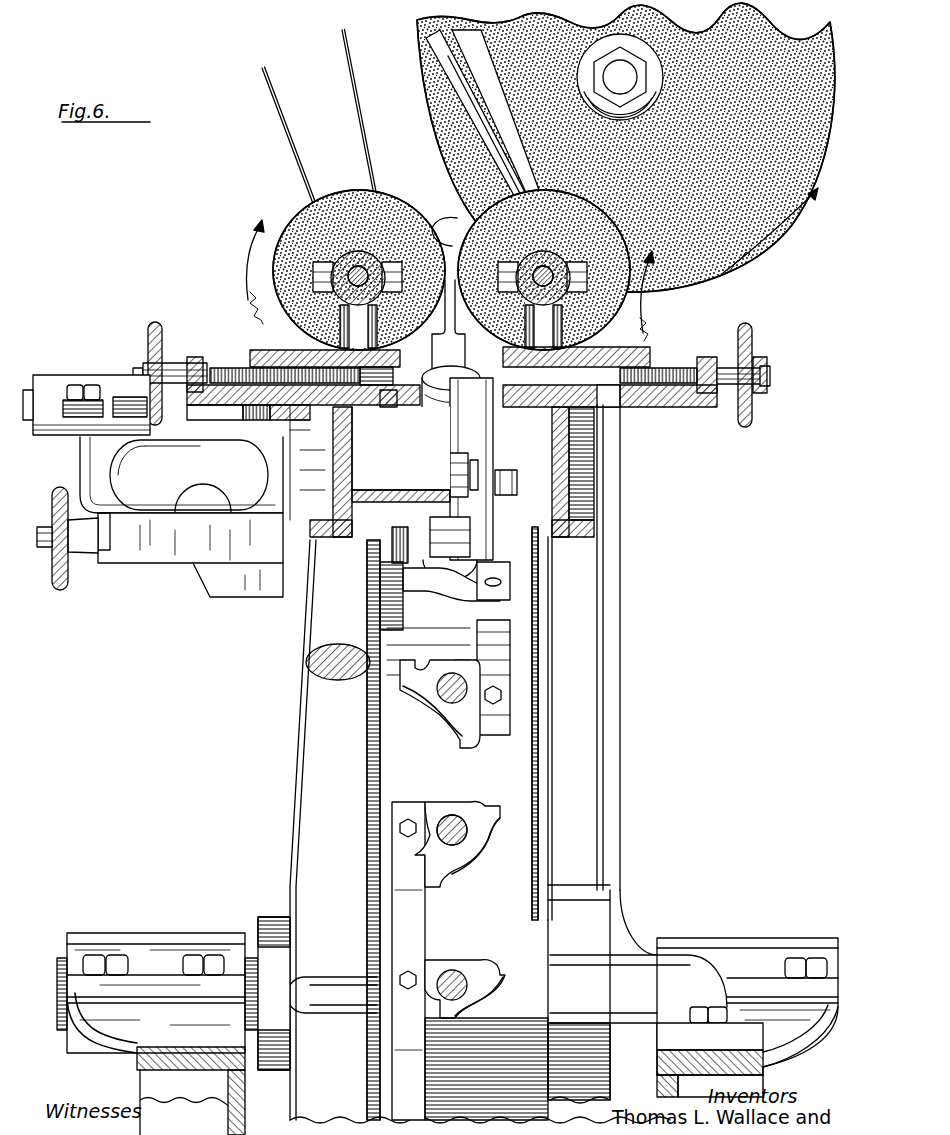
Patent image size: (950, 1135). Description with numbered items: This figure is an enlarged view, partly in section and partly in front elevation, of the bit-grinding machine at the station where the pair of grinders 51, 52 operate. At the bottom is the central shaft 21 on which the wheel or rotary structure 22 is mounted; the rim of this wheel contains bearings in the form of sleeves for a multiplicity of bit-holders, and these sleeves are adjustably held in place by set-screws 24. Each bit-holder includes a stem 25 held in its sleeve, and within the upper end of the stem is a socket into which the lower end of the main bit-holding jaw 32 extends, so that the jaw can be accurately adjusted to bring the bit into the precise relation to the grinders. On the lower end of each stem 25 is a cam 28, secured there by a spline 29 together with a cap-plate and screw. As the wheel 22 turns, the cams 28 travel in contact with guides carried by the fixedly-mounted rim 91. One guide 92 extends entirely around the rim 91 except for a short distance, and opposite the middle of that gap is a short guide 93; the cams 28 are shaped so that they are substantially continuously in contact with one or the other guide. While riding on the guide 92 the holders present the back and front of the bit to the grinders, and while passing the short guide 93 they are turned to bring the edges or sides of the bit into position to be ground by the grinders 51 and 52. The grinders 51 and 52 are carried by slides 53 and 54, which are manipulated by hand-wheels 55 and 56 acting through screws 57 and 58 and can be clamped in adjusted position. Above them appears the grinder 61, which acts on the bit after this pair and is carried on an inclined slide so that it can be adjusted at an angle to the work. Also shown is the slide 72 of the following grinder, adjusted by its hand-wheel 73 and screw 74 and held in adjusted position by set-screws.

The central shaft 21 is at (56, 965).
The wheel or rotary structure 22 is at (321, 733).
The set-screws 24 is at (518, 480).
The stem 25 is at (447, 400).
The cam 28 is at (413, 586).
The spline 29 is at (446, 820).
The main bit-holding jaw 32 is at (448, 330).
The grinder 51 is at (640, 303).
The grinder 52 is at (273, 274).
The slide 53 is at (533, 393).
The slide 54 is at (206, 440).
The hand-wheel 55 is at (753, 347).
The hand-wheel 56 is at (155, 322).
The screw 57 is at (676, 407).
The screw 58 is at (227, 366).
The grinder 61 is at (436, 118).
The slide 72 is at (101, 380).
The hand-wheel 73 is at (58, 590).
The screw 74 is at (45, 527).
The fixedly-mounted rim 91 is at (538, 767).
The guide 92 is at (396, 545).
The short guide 93 is at (503, 663).